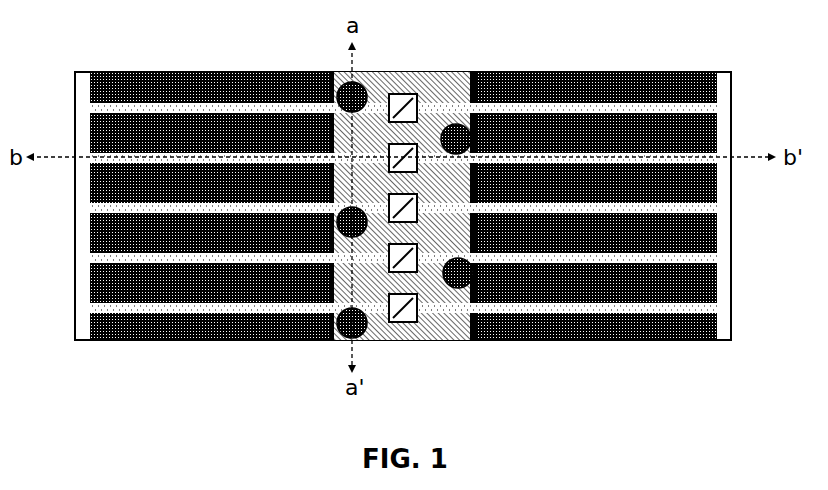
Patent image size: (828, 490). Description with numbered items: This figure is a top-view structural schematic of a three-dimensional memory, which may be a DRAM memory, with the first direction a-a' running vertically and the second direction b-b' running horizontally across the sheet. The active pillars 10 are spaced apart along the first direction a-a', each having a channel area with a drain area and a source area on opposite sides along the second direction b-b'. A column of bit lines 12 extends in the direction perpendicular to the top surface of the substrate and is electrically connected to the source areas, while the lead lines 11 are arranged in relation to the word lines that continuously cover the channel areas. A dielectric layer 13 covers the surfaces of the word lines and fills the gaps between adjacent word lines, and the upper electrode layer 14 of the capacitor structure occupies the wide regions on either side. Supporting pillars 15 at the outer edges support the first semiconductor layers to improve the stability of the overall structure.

The active pillar 10 is at (433, 312).
The lead line 11 is at (463, 288).
The bit line 12 is at (402, 94).
The dielectric layer 13 is at (461, 92).
The upper electrode layer 14 is at (590, 80).
The supporting pillar 15 is at (731, 252).